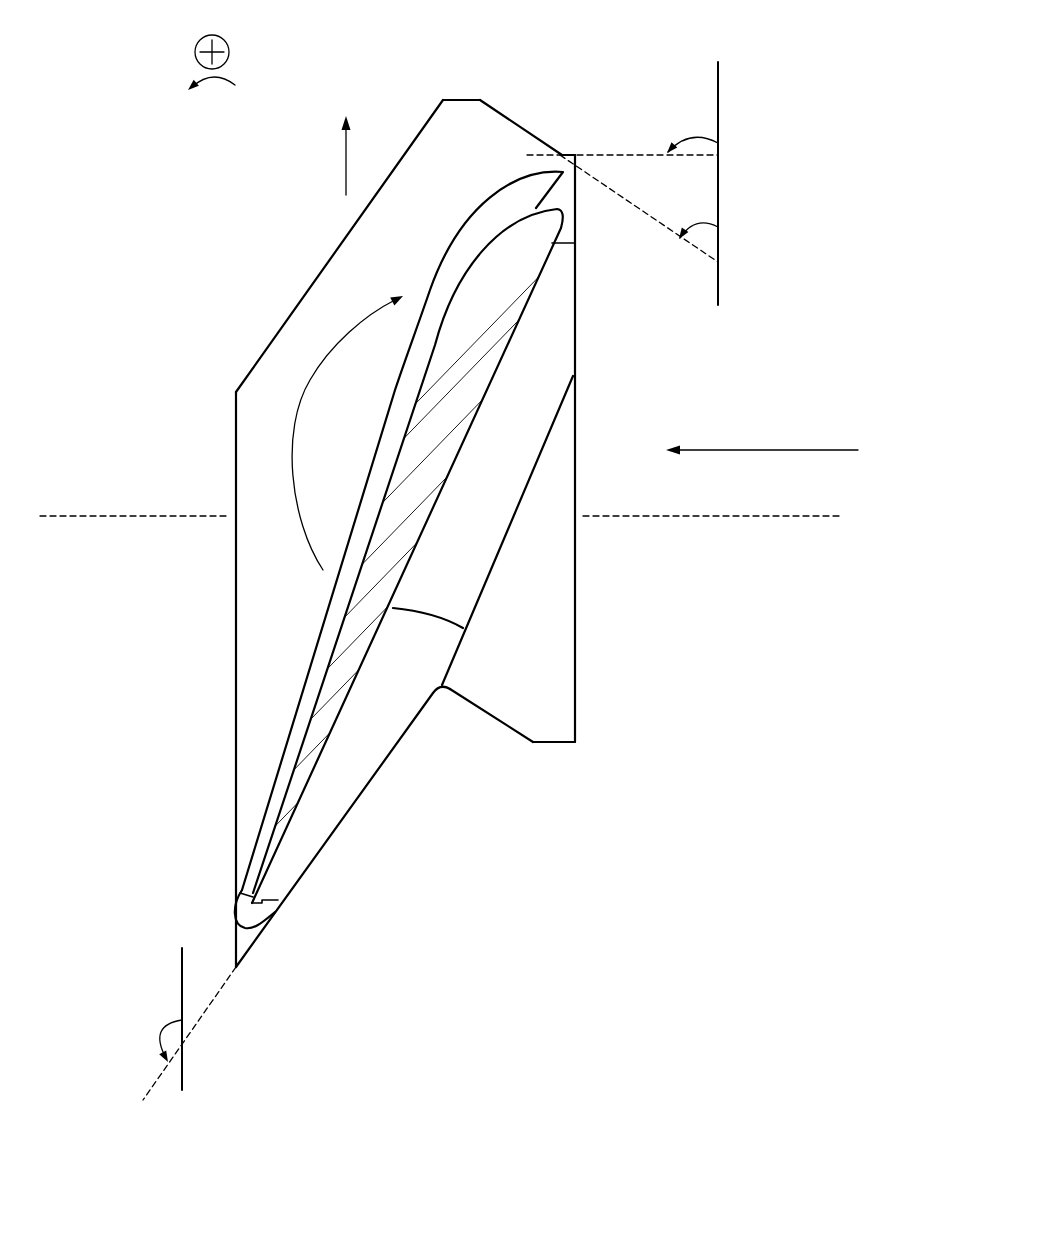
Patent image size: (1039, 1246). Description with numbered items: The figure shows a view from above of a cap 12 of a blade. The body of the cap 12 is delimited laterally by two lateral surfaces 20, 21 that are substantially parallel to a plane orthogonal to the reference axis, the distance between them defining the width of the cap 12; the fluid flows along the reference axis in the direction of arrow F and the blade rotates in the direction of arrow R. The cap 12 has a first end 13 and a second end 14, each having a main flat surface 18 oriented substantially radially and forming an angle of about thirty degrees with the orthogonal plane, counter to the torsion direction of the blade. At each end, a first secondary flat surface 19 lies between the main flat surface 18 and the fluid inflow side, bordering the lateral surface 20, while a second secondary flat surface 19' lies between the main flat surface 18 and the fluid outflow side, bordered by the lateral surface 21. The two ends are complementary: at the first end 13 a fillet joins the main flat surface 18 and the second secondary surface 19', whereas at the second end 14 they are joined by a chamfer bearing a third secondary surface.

The cap 12 is at (655, 80).
The first end 13 is at (400, 788).
The second end 14 is at (417, 112).
The main flat surface 18 is at (520, 125).
The first secondary flat surface 19 is at (577, 454).
The second secondary flat surface 19' is at (328, 533).
The lateral surface 20 is at (575, 396).
The lateral surface 21 is at (235, 442).